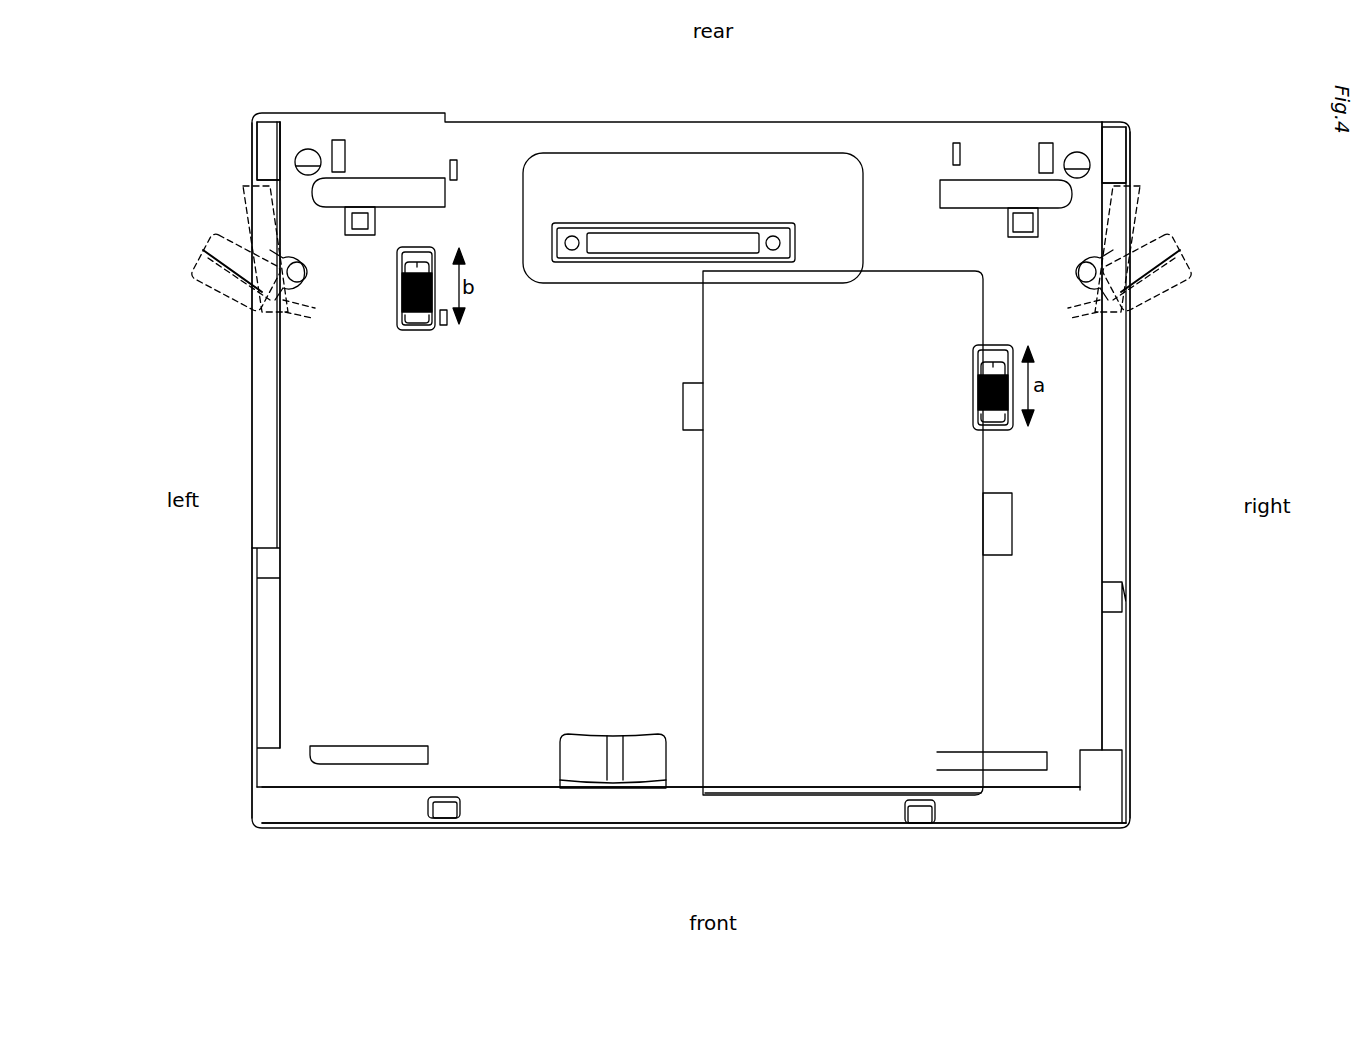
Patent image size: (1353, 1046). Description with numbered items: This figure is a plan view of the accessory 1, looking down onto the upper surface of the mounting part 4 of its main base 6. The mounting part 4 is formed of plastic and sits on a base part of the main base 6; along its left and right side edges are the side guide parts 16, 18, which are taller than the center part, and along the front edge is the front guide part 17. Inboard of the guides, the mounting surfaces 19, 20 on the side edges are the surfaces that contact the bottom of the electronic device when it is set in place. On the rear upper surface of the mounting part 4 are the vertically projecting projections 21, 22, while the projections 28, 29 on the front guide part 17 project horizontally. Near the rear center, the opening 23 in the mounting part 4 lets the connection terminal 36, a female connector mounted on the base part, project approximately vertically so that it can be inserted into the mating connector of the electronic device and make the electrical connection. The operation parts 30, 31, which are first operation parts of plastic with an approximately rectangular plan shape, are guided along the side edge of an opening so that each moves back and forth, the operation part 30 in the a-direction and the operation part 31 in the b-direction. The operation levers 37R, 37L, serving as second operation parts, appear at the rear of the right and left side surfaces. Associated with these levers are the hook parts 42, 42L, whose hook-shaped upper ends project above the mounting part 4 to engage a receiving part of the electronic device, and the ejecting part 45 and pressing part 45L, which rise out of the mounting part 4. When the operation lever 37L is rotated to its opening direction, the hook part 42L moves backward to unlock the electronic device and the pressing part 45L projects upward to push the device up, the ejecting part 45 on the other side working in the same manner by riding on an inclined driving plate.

The accessory 1 is at (1132, 456).
The mounting part 4 is at (1062, 568).
The main base 6 is at (1132, 508).
The side guide part 16 is at (270, 150).
The front guide part 17 is at (263, 805).
The side guide part 18 is at (1115, 157).
The mounting surface 19 is at (260, 432).
The mounting surface 20 is at (1118, 392).
The projection 21 is at (308, 158).
The projection 22 is at (1077, 160).
The opening 23 is at (717, 153).
The projection 28 is at (445, 818).
The projection 29 is at (921, 823).
The operation part 30 is at (973, 400).
The operation part 31 is at (397, 300).
The connection terminal 36 is at (621, 243).
The operation lever 37L is at (216, 258).
The operation lever 37R is at (1160, 262).
The hook part 42 is at (1047, 157).
The hook part 42L is at (340, 152).
The ejecting part 45 is at (1020, 222).
The pressing part 45L is at (368, 223).